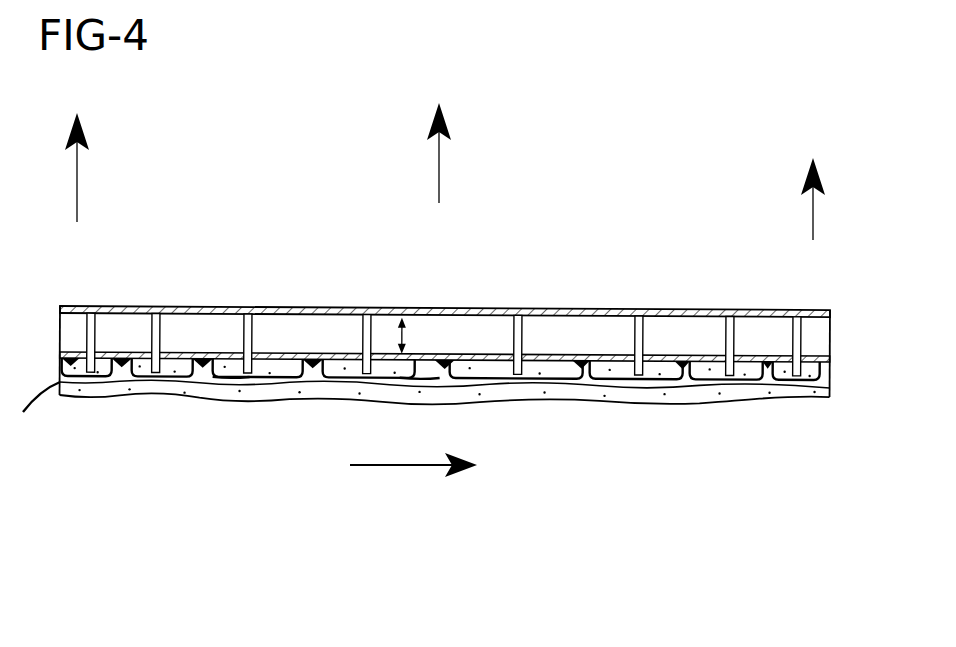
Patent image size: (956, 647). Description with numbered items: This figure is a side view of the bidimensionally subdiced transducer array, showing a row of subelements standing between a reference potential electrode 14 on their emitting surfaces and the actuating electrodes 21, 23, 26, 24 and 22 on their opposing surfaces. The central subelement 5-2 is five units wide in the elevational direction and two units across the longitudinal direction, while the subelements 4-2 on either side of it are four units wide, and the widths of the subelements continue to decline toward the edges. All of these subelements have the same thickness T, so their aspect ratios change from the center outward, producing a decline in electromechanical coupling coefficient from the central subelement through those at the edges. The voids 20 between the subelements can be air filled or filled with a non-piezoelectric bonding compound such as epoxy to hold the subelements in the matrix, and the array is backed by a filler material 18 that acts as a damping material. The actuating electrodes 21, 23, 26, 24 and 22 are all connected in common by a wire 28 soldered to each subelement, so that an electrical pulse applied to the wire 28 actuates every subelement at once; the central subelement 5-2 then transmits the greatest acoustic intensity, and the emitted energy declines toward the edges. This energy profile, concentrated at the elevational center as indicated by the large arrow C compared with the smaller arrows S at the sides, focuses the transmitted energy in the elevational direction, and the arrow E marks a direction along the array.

The reference potential electrode 14 is at (188, 306).
The actuating electrode 22 is at (76, 348).
The voids 20 is at (88, 328).
The filler material 18 is at (627, 392).
The actuating electrode 23 is at (334, 372).
The actuating electrode 24 is at (110, 372).
The actuating electrode 26 is at (220, 373).
The actuating electrode 21 is at (425, 363).
The wire 28 is at (32, 397).
The subelement 4-2 is at (316, 330).
The central subelement 5-2 is at (474, 327).
The thickness T is at (398, 332).
The smaller arrows S is at (77, 172).
The large arrow C is at (439, 171).
The direction E is at (425, 469).